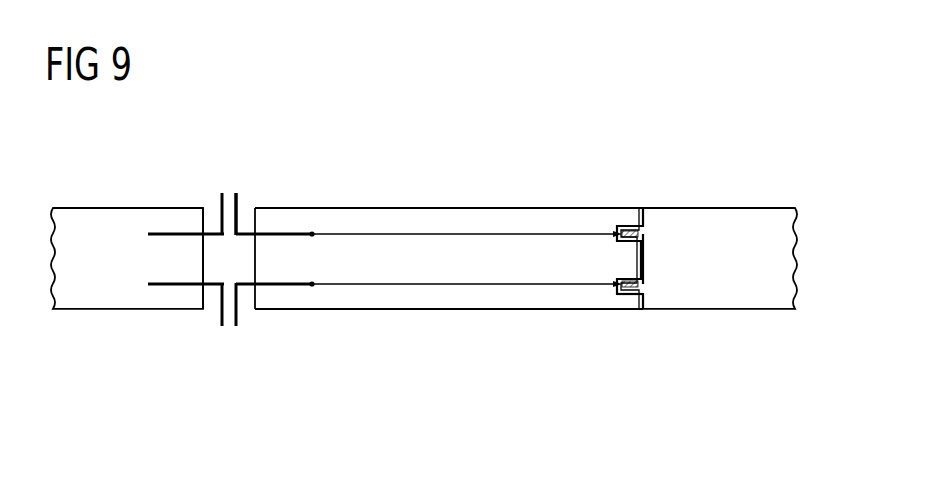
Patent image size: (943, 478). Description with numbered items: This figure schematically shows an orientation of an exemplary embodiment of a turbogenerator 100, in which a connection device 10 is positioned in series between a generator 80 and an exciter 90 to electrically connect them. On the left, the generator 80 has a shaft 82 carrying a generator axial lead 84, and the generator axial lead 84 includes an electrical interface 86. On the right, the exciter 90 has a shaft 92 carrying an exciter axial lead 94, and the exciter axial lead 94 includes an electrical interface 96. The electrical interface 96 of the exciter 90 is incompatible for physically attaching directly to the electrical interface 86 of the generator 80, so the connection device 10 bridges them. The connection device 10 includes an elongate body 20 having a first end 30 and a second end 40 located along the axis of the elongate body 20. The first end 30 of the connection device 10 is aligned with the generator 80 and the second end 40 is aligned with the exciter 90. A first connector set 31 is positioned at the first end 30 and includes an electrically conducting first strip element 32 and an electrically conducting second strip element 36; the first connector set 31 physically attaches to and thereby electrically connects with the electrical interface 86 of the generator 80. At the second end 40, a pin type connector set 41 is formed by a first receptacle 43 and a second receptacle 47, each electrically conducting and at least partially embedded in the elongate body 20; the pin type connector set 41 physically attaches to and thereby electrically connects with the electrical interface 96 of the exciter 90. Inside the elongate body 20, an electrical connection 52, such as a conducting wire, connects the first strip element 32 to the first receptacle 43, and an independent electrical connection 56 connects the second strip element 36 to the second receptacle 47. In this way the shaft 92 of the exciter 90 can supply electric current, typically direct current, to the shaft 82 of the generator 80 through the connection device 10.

The turbogenerator 100 is at (398, 133).
The connection device 10 is at (468, 207).
The elongate body 20 is at (408, 310).
The first end 30 is at (290, 313).
The first connector set 31 is at (240, 308).
The first strip element 32 is at (237, 210).
The second strip element 36 is at (236, 312).
The second end 40 is at (622, 200).
The pin type connector set 41 is at (628, 298).
The first receptacle 43 is at (632, 220).
The second receptacle 47 is at (617, 297).
The electrical connection 52 is at (522, 235).
The electrical connection 56 is at (525, 285).
The generator 80 is at (107, 192).
The shaft 82 is at (82, 227).
The generator axial lead 84 is at (195, 217).
The electrical interface 86 is at (148, 234).
The exciter 90 is at (748, 187).
The shaft 92 is at (730, 297).
The exciter axial lead 94 is at (703, 220).
The electrical interface 96 is at (648, 234).